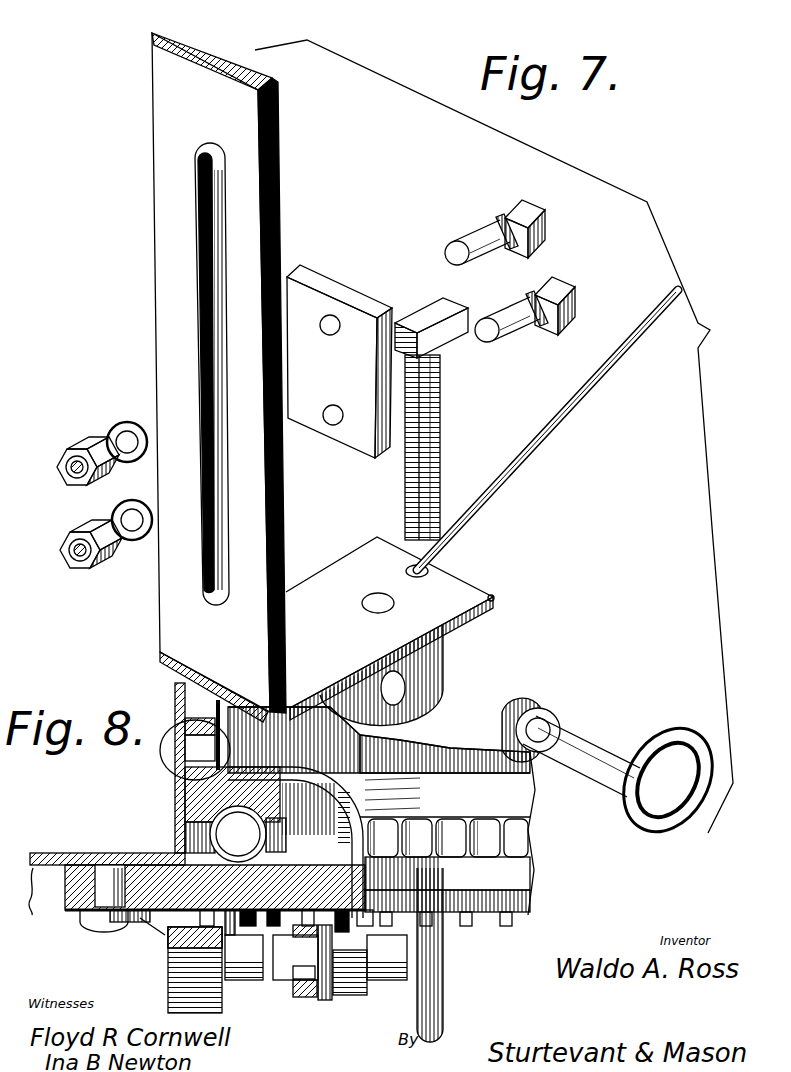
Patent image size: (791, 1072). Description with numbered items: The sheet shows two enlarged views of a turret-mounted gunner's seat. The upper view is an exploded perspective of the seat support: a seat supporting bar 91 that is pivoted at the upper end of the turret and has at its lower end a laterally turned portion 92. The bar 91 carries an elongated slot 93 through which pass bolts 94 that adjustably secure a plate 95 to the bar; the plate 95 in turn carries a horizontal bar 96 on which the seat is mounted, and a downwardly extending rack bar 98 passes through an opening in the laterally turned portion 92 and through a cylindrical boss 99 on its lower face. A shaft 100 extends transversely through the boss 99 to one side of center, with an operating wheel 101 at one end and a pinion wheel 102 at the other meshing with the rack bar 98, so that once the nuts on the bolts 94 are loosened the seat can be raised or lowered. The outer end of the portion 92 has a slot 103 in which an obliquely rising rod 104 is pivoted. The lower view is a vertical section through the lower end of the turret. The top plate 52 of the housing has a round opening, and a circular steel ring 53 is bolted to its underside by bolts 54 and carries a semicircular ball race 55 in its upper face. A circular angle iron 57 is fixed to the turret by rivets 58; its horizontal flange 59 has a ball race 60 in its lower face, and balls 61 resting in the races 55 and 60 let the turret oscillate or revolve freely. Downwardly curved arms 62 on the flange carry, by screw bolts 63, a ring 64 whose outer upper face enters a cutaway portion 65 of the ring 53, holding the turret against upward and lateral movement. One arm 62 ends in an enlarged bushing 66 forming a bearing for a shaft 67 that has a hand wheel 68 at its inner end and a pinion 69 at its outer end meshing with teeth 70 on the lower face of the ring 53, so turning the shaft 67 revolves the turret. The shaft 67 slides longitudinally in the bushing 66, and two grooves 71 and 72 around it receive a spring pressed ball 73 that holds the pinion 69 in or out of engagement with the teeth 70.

In FIG. 7, the seat supporting bar 91 is at (215, 377).
In FIG. 7, the laterally turned portion 92 is at (403, 623).
In FIG. 7, the elongated slot 93 is at (205, 338).
In FIG. 7, the bolts 94 is at (514, 308).
In FIG. 7, the plate 95 is at (339, 361).
In FIG. 7, the horizontal bar 96 is at (437, 405).
In FIG. 7, the rack bar 98 is at (441, 406).
In FIG. 7, the cylindrical boss 99 is at (447, 657).
In FIG. 7, the shaft 100 is at (578, 738).
In FIG. 7, the operating wheel 101 is at (662, 735).
In FIG. 7, the pinion wheel 102 is at (526, 708).
In FIG. 7, the slot 103 is at (432, 566).
In FIG. 7, the rod 104 is at (580, 393).
In FIG. 8, the top plate 52 is at (150, 855).
In FIG. 8, the circular steel ring 53 is at (155, 914).
In FIG. 8, the bolts 54 is at (100, 882).
In FIG. 8, the ball race 55 is at (165, 922).
In FIG. 8, the circular angle iron 57 is at (200, 800).
In FIG. 8, the rivets 58 is at (176, 752).
In FIG. 8, the horizontal flange 59 is at (309, 809).
In FIG. 8, the ball race 60 is at (218, 800).
In FIG. 8, the balls 61 is at (248, 834).
In FIG. 8, the downwardly curved arms 62 is at (350, 805).
In FIG. 8, the screw bolts 63 is at (447, 873).
In FIG. 8, the ring 64 is at (512, 915).
In FIG. 8, the cutaway portion 65 is at (295, 842).
In FIG. 8, the enlarged bushing 66 is at (345, 982).
In FIG. 8, the shaft 67 is at (250, 982).
In FIG. 8, the hand wheel 68 is at (445, 1008).
In FIG. 8, the pinion 69 is at (200, 1014).
In FIG. 8, the teeth 70 is at (244, 957).
In FIG. 8, the groove 71 is at (295, 957).
In FIG. 8, the groove 72 is at (307, 968).
In FIG. 8, the spring pressed ball 73 is at (355, 935).